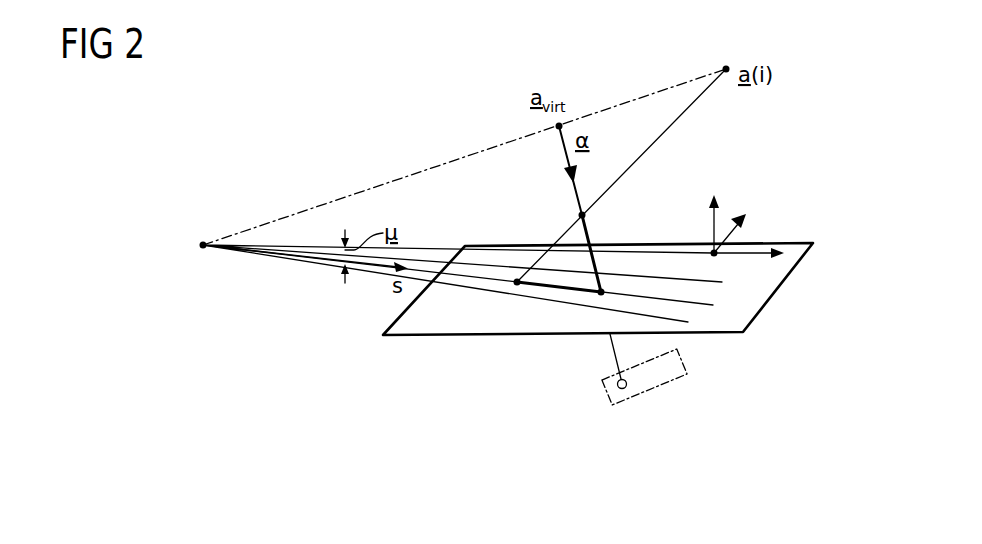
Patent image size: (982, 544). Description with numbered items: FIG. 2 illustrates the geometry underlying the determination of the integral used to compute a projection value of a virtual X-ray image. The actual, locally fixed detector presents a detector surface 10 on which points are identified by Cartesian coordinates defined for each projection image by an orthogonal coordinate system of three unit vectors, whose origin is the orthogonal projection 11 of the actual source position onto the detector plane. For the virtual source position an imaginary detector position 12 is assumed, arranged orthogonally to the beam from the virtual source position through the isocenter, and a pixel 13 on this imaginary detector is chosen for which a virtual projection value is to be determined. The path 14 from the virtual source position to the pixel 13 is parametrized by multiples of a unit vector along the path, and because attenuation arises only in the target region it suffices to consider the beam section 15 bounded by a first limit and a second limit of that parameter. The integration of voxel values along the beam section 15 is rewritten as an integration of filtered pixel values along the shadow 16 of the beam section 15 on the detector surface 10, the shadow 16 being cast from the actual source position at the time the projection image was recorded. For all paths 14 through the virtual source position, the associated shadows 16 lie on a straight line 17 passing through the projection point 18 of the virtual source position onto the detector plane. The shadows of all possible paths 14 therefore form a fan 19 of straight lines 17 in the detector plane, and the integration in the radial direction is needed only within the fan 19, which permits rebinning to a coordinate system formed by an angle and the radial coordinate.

The detector surface 10 is at (428, 336).
The orthogonal projection of a(i) onto the detector plane 11 is at (714, 257).
The imaginary detector position 12 is at (661, 388).
The pixel 13 is at (623, 389).
The path 14 is at (610, 352).
The beam section 15 is at (590, 233).
The shadow 16 is at (537, 287).
The straight line 17 is at (305, 257).
The projection point 18 is at (201, 242).
The fan 19 is at (294, 232).